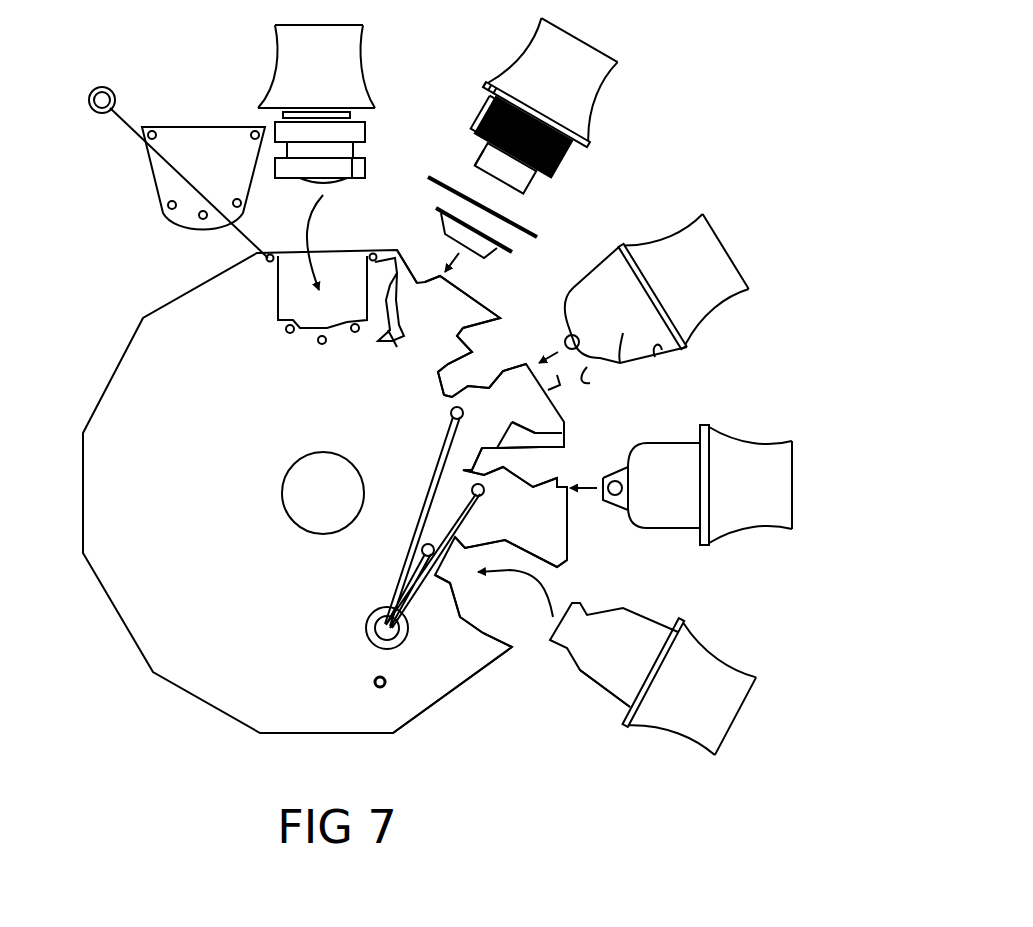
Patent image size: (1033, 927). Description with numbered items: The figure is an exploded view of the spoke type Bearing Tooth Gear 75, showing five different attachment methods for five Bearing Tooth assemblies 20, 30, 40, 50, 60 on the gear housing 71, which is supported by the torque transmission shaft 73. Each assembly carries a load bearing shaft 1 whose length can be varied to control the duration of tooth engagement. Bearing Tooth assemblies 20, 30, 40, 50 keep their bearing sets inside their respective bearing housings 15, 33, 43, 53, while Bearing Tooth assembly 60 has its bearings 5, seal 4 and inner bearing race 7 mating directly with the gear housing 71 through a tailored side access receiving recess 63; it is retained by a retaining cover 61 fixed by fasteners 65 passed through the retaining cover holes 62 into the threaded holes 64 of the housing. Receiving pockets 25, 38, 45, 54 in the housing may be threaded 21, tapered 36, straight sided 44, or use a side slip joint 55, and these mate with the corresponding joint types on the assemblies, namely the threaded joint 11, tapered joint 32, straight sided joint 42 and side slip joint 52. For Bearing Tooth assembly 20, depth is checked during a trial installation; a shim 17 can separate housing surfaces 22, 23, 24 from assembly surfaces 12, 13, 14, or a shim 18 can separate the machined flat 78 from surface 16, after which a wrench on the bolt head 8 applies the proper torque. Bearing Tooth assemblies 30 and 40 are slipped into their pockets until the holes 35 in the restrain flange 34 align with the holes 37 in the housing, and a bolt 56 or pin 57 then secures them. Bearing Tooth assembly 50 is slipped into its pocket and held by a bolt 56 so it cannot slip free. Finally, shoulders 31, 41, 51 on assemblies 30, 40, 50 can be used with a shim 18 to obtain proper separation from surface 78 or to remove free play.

The load bearing shaft 1 is at (278, 65).
The seal 4 is at (365, 115).
The bearings 5 is at (368, 148).
The inner bearing race 7 is at (355, 165).
The bolt head 8 is at (590, 148).
The threaded joint 11 is at (555, 163).
The interface surface 12 is at (540, 190).
The interface surface 13 is at (476, 156).
The interface surface 14 is at (520, 195).
The bearing housing 15 is at (482, 110).
The interface surface 16 is at (478, 96).
The shim 17 is at (512, 253).
The shim 18 is at (545, 240).
The Bearing Tooth assembly 20 is at (573, 55).
The threaded pocket 21 is at (407, 279).
The gear housing surface 22 is at (329, 352).
The gear housing surface 23 is at (397, 347).
The gear housing surface 24 is at (392, 343).
The receiving pocket 25 is at (458, 270).
The Bearing Tooth assembly 30 is at (704, 250).
The shoulder 31 is at (705, 357).
The tapered joint 32 is at (687, 383).
The bearing housing 33 is at (623, 333).
The restrain flange 34 is at (588, 367).
The holes 35 is at (566, 340).
The tapered pocket 36 is at (480, 357).
The holes 37 is at (452, 412).
The receiving pocket 38 is at (552, 385).
The Bearing Tooth assembly 40 is at (763, 478).
The shoulder 41 is at (705, 545).
The straight sided joint 42 is at (705, 440).
The bearing housing 43 is at (675, 512).
The straight sided pocket 44 is at (520, 452).
The receiving pocket 45 is at (567, 508).
The Bearing Tooth assembly 50 is at (700, 706).
The shoulder 51 is at (623, 720).
The side slip joint 52 is at (553, 637).
The bearing housing 53 is at (607, 675).
The receiving pocket 54 is at (490, 660).
The side slip joint pocket 55 is at (452, 572).
The bolt 56 is at (367, 622).
The pin 57 is at (372, 682).
The Bearing Tooth assembly 60 is at (335, 52).
The retaining cover 61 is at (198, 127).
The retaining cover holes 62 is at (170, 205).
The side access receiving recess 63 is at (277, 293).
The threaded holes 64 is at (287, 333).
The fasteners 65 is at (98, 112).
The gear housing 71 is at (287, 720).
The torque transmission shaft 73 is at (292, 520).
The gear assembly 75 is at (60, 663).
The machined flat 78 is at (365, 733).